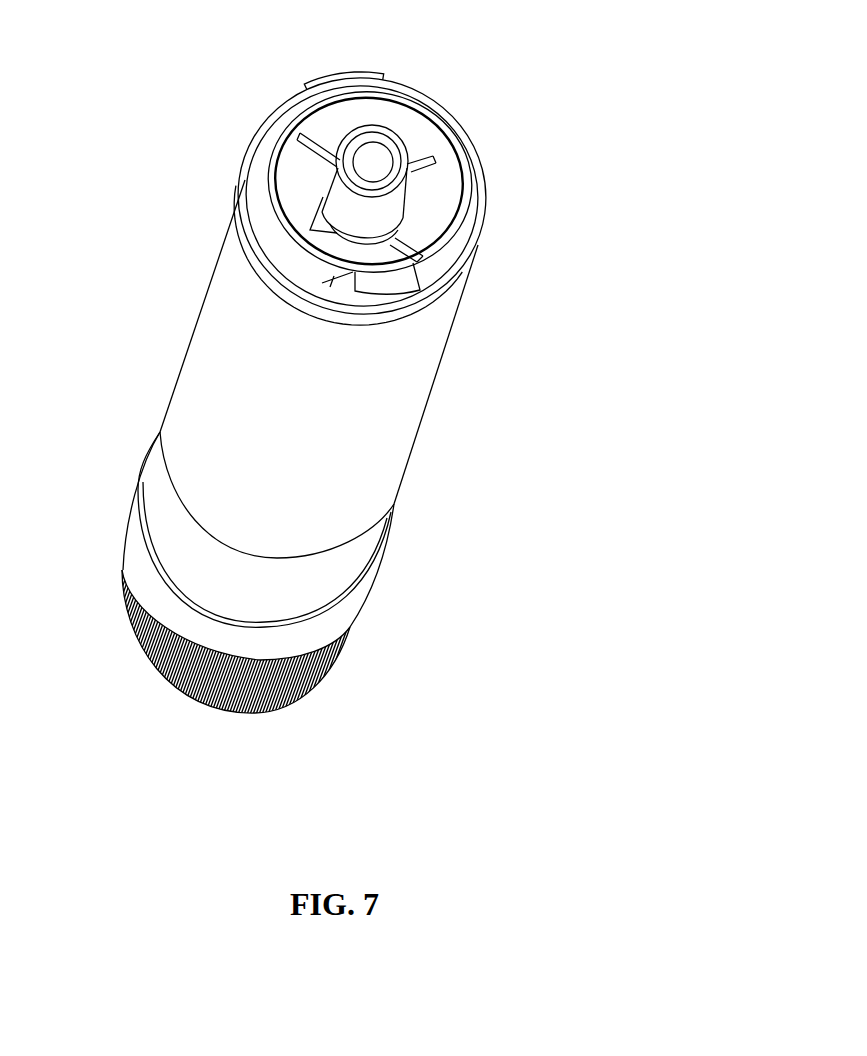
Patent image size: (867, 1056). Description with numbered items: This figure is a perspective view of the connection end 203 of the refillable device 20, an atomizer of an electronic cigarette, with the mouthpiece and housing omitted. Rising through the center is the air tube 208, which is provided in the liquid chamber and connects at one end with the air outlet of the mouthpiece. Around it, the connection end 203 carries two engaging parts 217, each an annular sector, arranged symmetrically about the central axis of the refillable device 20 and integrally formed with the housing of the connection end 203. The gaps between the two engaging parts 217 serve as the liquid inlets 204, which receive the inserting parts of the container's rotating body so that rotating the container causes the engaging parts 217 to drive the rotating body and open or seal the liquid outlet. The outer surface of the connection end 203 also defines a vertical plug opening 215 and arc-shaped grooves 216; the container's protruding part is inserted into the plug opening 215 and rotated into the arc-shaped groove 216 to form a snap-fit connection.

The refillable device 20 is at (190, 241).
The connection end 203 is at (483, 173).
The liquid inlet 204 is at (303, 177).
The air tube 208 is at (407, 150).
The plug opening 215 is at (380, 283).
The arc-shaped groove 216 is at (320, 287).
The engaging part 217 is at (338, 130).